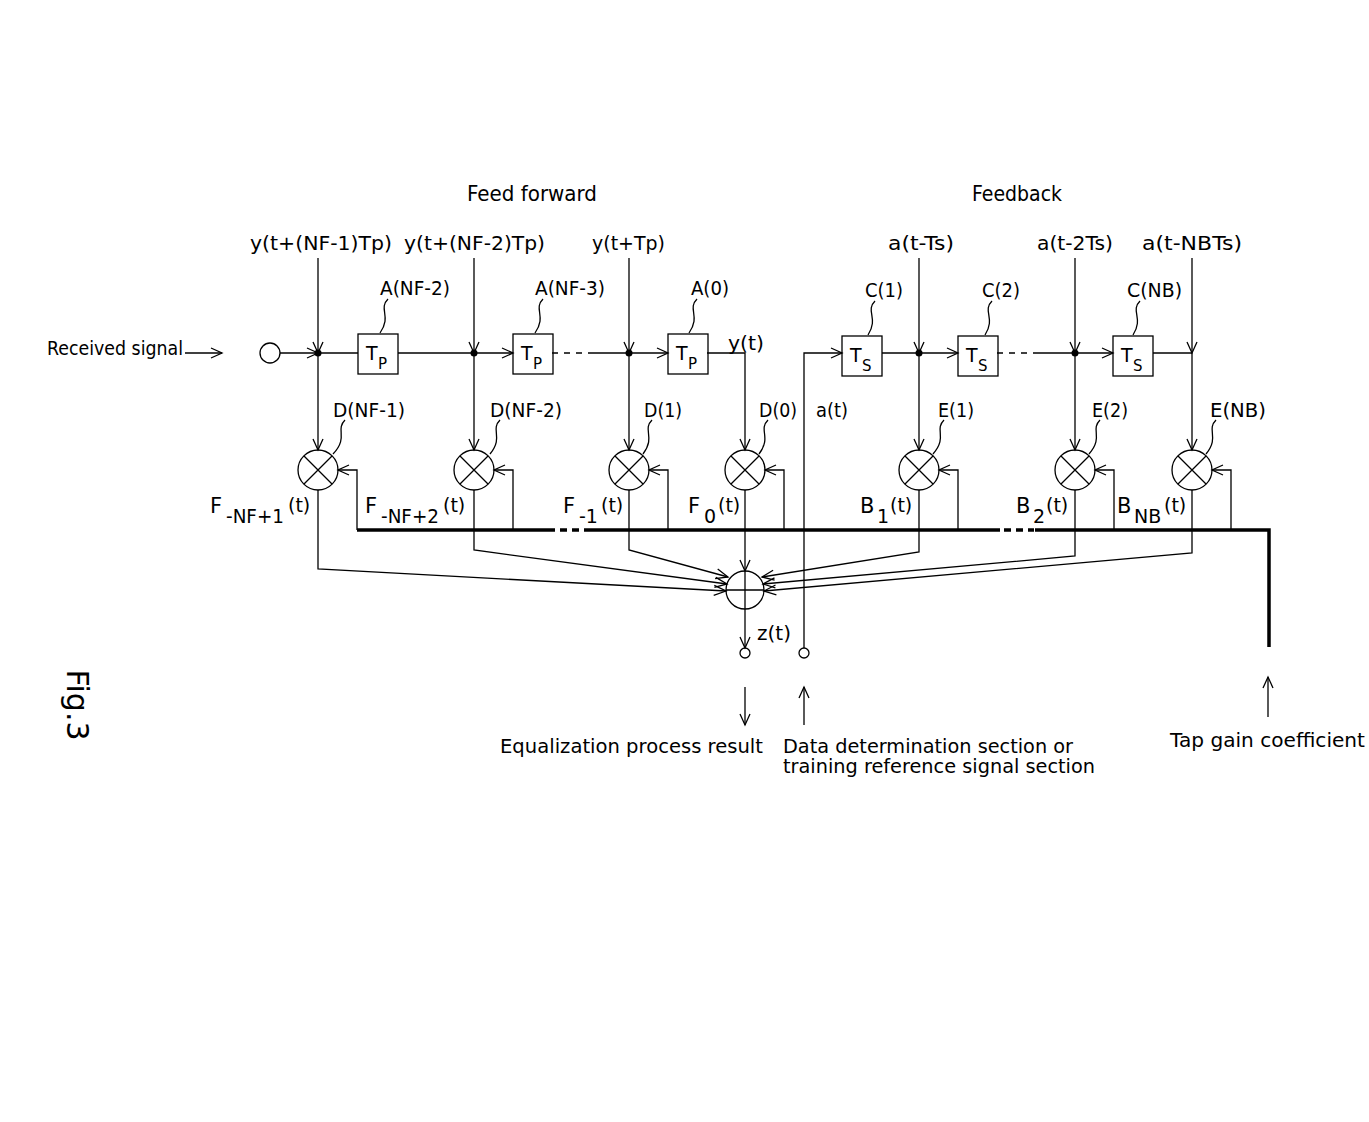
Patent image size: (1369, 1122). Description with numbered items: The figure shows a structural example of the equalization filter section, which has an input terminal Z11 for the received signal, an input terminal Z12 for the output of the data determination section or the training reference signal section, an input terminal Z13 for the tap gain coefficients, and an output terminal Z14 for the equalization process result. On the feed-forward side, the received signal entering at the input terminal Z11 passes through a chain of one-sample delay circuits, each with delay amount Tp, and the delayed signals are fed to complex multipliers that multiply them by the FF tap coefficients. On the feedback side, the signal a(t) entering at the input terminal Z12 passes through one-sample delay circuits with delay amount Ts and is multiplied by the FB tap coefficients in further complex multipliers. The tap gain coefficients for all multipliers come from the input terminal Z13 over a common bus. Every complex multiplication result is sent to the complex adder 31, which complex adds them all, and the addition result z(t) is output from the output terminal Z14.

The input terminal of a received signal Z11 is at (277, 343).
The input terminal of an output from the data determination section or training refe Z12 is at (805, 664).
The input terminal of a tap gain coefficient Z13 is at (823, 601).
The output terminal of an equalization process result Z14 is at (747, 645).
The complex adder 31 is at (730, 606).